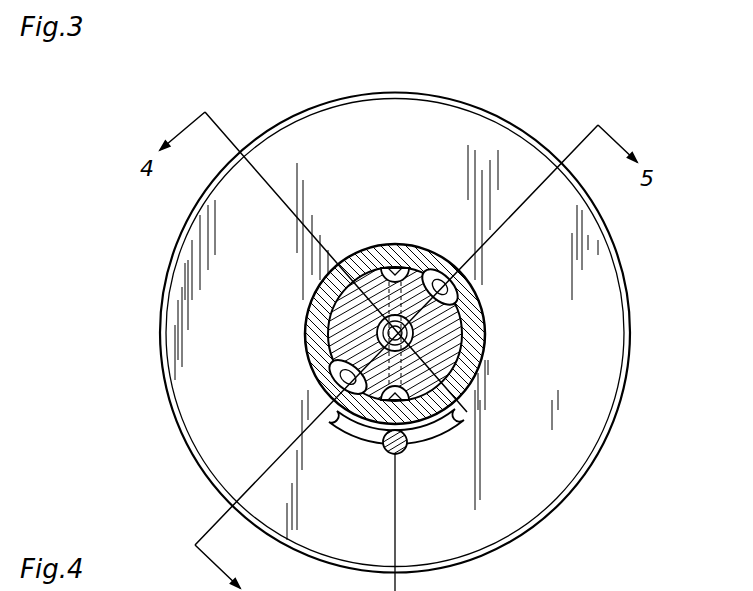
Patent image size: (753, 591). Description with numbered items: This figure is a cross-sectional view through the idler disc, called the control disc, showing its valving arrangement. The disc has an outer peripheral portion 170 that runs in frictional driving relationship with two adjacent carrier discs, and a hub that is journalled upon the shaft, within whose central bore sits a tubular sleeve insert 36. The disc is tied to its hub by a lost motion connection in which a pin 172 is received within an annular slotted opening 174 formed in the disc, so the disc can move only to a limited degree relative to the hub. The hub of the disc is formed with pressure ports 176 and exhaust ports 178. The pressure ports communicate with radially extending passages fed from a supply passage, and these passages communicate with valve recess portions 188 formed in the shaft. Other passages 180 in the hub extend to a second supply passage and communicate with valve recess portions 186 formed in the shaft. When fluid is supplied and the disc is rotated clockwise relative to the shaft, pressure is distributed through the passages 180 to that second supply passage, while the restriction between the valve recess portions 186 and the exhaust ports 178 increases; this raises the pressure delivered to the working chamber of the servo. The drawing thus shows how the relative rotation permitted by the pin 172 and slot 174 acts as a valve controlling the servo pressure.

The outer peripheral portion 170 is at (410, 333).
The exhaust ports 178 is at (338, 288).
The passages 180 is at (480, 324).
The tubular sleeve insert 36 is at (482, 356).
The pressure ports 176 is at (455, 291).
The valve recess portions 188 is at (473, 295).
The valve recess portions 186 is at (412, 266).
The annular slotted opening 174 is at (450, 448).
The pin 172 is at (408, 453).